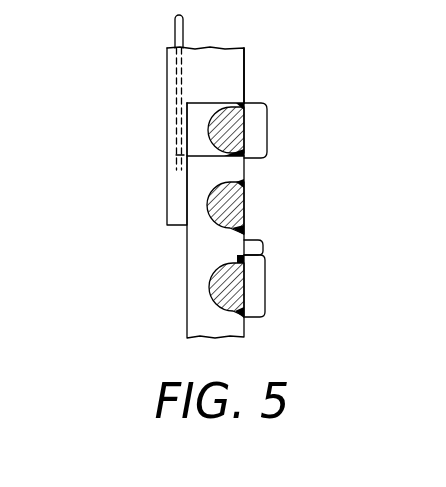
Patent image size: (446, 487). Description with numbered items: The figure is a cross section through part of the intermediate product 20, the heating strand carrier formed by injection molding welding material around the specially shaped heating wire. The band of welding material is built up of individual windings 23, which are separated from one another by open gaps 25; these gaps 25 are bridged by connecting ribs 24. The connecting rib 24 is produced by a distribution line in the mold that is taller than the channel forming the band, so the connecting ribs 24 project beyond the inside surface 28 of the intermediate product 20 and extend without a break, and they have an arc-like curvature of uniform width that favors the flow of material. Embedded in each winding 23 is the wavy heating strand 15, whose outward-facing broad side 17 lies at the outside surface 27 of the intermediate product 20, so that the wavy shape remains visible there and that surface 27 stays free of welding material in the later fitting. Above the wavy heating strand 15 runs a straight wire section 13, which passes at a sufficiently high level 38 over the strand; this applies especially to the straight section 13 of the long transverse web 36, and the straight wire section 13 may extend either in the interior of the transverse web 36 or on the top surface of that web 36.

The straight wire section 13 is at (176, 33).
The heating strand 15 is at (243, 201).
The outward-facing broad side 17 is at (267, 128).
The intermediate product 20 is at (132, 113).
The winding of the band 23 is at (265, 283).
The connecting rib 24 is at (207, 250).
The gap 25 is at (263, 245).
The outside surface 27 is at (245, 75).
The inside surface 28 is at (208, 283).
The transverse web 36 is at (197, 65).
The level 38 is at (214, 152).